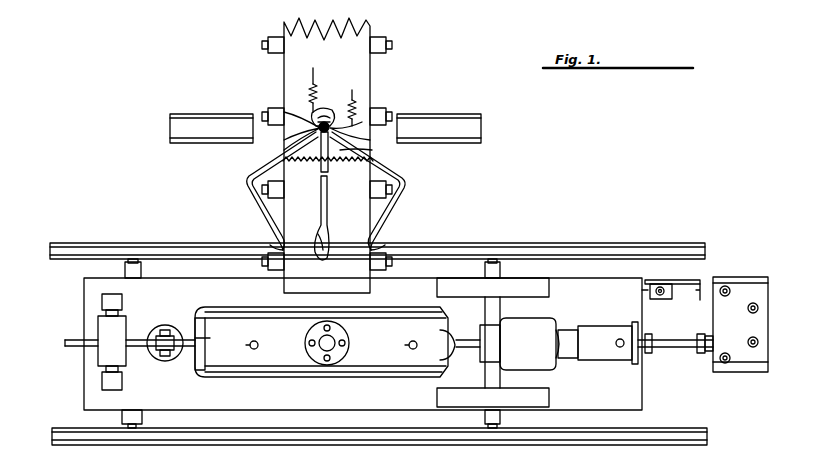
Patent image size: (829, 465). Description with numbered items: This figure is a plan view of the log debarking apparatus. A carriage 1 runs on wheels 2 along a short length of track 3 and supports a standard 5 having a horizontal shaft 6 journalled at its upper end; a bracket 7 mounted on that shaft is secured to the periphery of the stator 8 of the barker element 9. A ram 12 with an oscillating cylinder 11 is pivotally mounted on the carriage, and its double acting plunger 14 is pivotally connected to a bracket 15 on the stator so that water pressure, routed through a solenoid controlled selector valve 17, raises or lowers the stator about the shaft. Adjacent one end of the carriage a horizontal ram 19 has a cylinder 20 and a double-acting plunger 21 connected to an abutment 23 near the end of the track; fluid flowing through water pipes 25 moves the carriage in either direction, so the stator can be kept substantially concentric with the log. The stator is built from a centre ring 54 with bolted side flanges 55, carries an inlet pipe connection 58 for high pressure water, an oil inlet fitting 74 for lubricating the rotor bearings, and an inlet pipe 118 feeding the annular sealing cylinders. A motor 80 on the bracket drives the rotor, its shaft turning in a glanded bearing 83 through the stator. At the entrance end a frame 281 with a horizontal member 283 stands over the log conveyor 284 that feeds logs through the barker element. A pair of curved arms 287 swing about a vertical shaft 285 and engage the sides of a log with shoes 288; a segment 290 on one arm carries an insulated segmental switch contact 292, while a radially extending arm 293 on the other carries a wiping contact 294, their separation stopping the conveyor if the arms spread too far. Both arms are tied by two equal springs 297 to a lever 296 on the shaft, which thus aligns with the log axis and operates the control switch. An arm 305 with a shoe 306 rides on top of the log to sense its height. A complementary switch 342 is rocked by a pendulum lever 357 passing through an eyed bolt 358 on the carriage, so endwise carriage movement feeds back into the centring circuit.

The carriage 1 is at (630, 402).
The wheels 2 is at (23, 223).
The track 3 is at (664, 252).
The standard 5 is at (549, 289).
The horizontal shaft 6 is at (505, 376).
The bracket 7 is at (572, 360).
The stator 8 is at (200, 320).
The barker element 9 is at (198, 364).
The oscillating cylinder 11 is at (162, 334).
The ram 12 is at (162, 362).
The double acting plunger 14 is at (158, 336).
The bracket 15 is at (200, 338).
The solenoid controlled selector valve 17 is at (108, 326).
The horizontal ram 19 is at (610, 332).
The cylinder 20 is at (590, 330).
The double-acting plunger 21 is at (678, 346).
The abutment 23 is at (752, 372).
The water pipes 25 is at (622, 350).
The centre ring 54 is at (295, 328).
The side flanges 55 is at (240, 377).
The inlet pipe connection 58 is at (338, 362).
The oil inlet fitting 74 is at (250, 346).
The motor 80 is at (540, 312).
The glanded bearing 83 is at (460, 347).
The inlet pipe 118 is at (412, 350).
The frame 281 is at (188, 98).
The horizontal member 283 is at (481, 130).
The log conveyor 284 is at (388, 50).
The vertical shaft 285 is at (372, 148).
The arms 287 is at (247, 180).
The shoe 288 is at (275, 245).
The segment 290 is at (294, 126).
The insulated segmental switch contact 292 is at (312, 115).
The radially extending arm 293 is at (319, 127).
The wiping contact 294 is at (325, 112).
The lever 296 is at (378, 162).
The springs 297 is at (318, 170).
The arm 305 is at (328, 198).
The shoe 306 is at (326, 250).
The complementary switch 342 is at (672, 298).
The pendulum lever 357 is at (656, 299).
The eyed bolt 358 is at (644, 300).